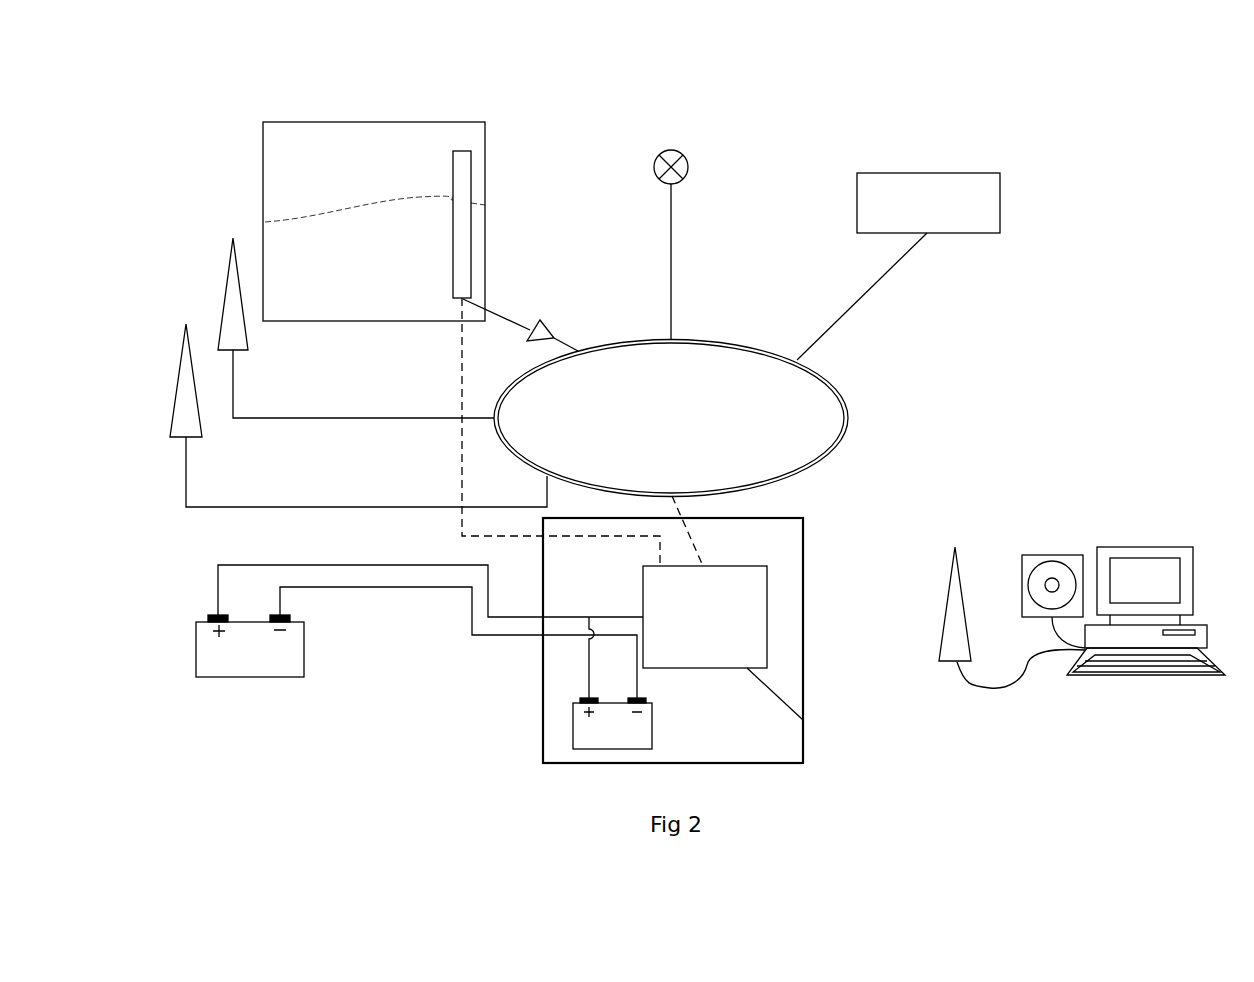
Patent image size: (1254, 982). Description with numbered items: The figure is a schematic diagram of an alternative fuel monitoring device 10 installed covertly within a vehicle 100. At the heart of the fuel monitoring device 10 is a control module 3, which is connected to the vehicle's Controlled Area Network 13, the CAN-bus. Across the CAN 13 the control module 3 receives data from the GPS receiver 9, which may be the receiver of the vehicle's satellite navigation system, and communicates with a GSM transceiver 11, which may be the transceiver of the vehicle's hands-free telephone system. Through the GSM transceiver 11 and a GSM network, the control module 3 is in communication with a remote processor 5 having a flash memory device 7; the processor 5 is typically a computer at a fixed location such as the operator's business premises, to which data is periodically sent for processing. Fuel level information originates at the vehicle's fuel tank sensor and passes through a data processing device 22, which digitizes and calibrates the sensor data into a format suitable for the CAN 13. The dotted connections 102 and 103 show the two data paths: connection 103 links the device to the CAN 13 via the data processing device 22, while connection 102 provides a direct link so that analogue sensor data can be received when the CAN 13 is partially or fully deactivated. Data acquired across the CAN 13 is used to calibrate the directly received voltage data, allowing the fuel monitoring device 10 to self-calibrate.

The vehicle 100 is at (806, 126).
The GSM transceiver 11 is at (326, 322).
The GPS receiver 9 is at (333, 413).
The Controlled Area Network 13 is at (838, 385).
The data processing device 22 is at (545, 315).
The connection 102 is at (462, 438).
The connection 103 is at (693, 538).
The fuel monitoring device 10 is at (803, 555).
The control module 3 is at (803, 720).
The flash memory device 7 is at (1043, 553).
The processor 5 is at (1130, 637).